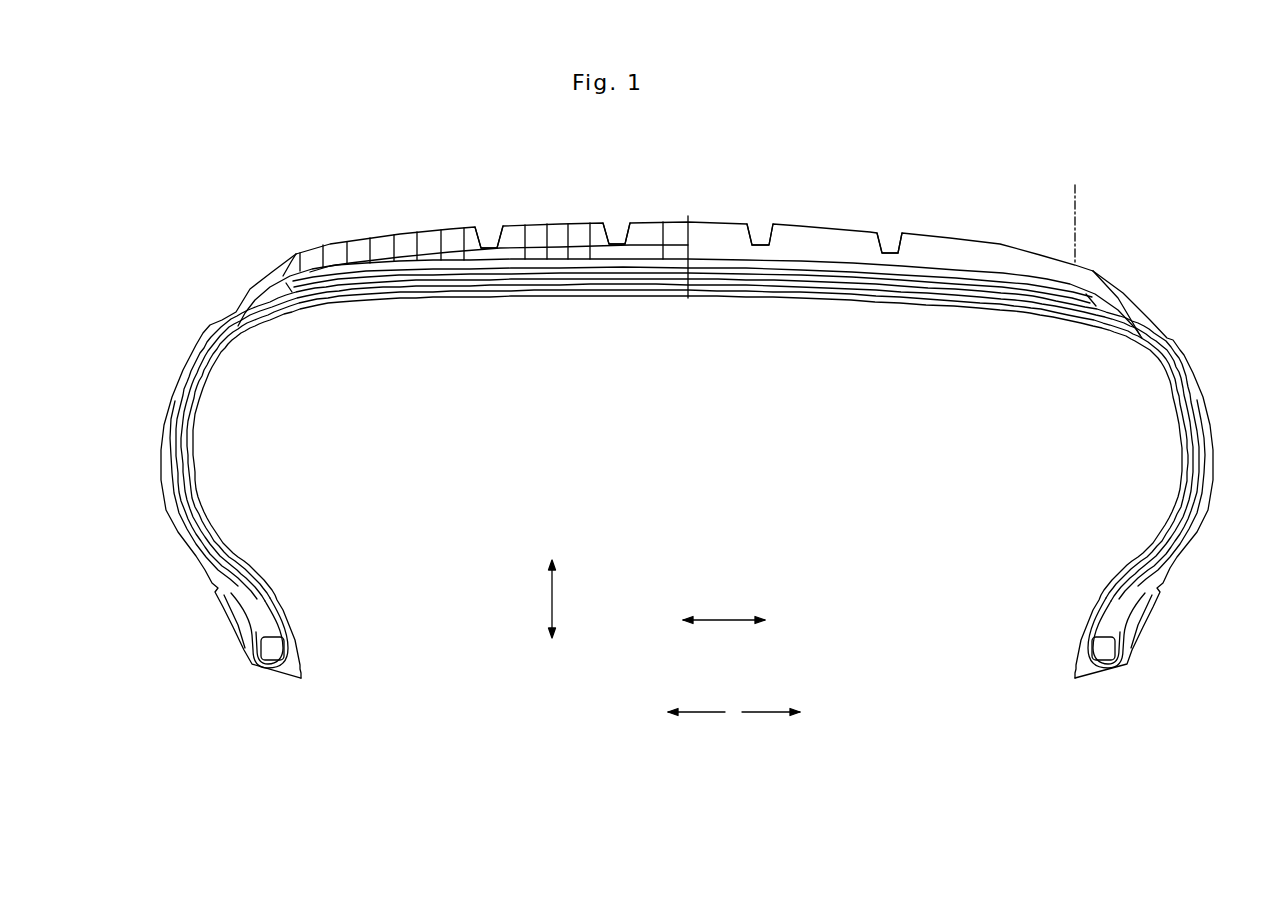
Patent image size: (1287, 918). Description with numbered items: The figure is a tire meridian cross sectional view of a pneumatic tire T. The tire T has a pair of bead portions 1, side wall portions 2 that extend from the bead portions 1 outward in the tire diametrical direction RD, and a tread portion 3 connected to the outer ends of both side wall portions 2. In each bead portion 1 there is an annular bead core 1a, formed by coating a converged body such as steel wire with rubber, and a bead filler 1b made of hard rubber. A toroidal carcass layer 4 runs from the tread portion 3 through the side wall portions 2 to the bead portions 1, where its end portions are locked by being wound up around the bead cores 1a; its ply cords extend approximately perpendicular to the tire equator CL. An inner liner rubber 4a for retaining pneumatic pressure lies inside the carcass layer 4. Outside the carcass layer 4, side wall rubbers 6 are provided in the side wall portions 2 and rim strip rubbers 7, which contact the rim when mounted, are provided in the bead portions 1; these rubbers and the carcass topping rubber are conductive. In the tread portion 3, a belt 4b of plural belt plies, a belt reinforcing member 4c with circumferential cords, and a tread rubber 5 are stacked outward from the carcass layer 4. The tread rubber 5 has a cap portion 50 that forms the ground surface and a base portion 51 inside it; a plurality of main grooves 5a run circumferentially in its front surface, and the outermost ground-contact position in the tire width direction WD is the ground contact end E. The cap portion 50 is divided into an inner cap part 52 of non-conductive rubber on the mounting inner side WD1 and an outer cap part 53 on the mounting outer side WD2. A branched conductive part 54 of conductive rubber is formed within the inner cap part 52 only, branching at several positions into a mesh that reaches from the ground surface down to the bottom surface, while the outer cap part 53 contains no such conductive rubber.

The pneumatic tire T is at (220, 205).
The bead portion 1 is at (682, 657).
The bead core 1a is at (268, 650).
The bead filler 1b is at (258, 613).
The side wall portion 2 is at (150, 392).
The tread portion 3 is at (440, 216).
The carcass layer 4 is at (691, 440).
The inner liner rubber 4a is at (330, 308).
The belt 4b is at (552, 282).
The belt reinforcing member 4c is at (380, 272).
The tread rubber 5 is at (689, 205).
The main groove 5a is at (481, 240).
The side wall rubber 6 is at (165, 482).
The rim strip rubber 7 is at (220, 604).
The cap portion 50 is at (690, 240).
The base portion 51 is at (790, 264).
The inner cap part 52 is at (562, 235).
The outer cap part 53 is at (940, 247).
The branched conductive part 54 is at (297, 250).
The tire equator CL is at (687, 274).
The ground contact end E is at (1074, 212).
The tire diametrical direction RD is at (572, 599).
The tire width direction WD is at (724, 636).
The mounting inner side WD1 is at (696, 730).
The mounting outer side WD2 is at (771, 730).